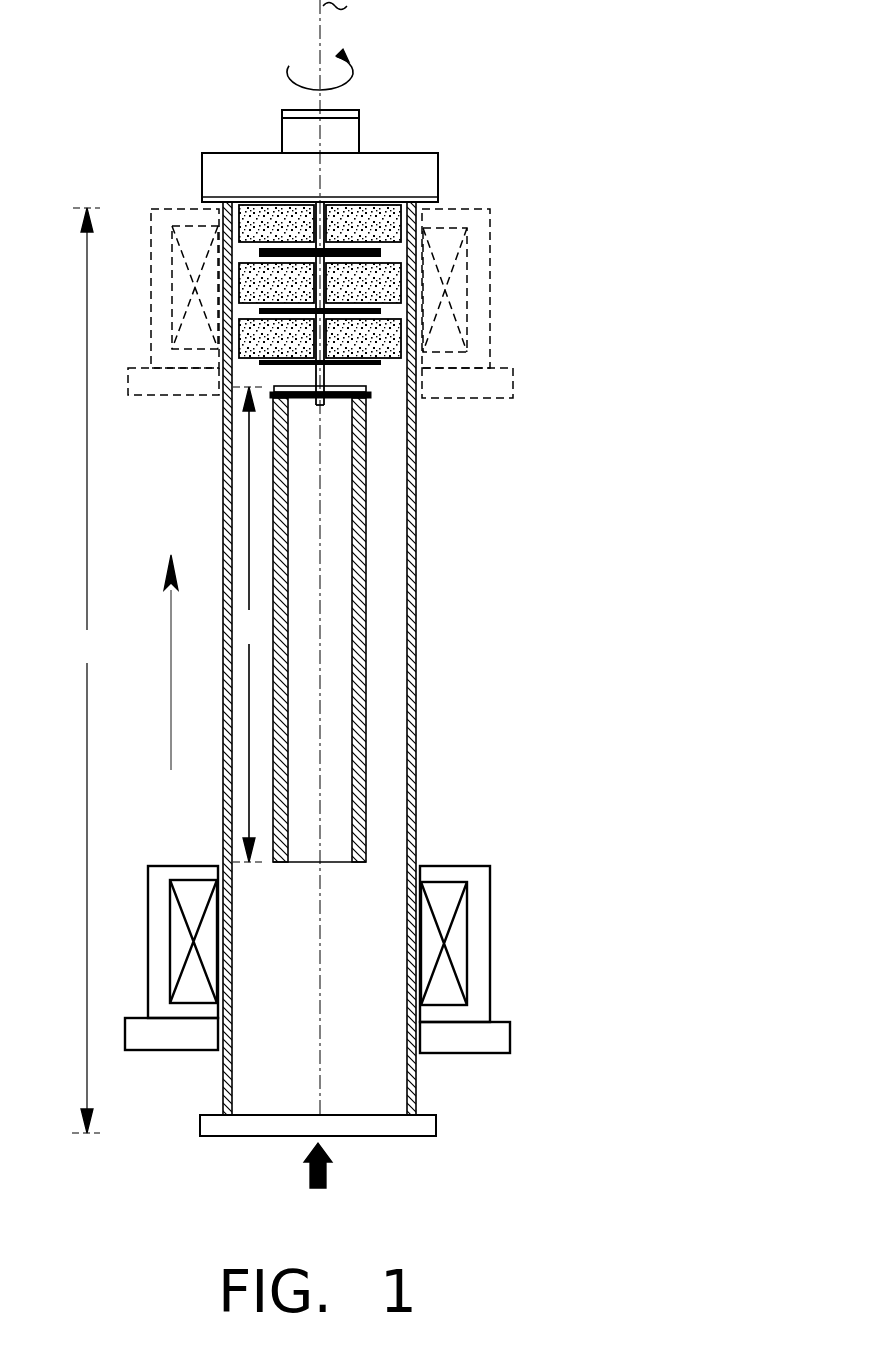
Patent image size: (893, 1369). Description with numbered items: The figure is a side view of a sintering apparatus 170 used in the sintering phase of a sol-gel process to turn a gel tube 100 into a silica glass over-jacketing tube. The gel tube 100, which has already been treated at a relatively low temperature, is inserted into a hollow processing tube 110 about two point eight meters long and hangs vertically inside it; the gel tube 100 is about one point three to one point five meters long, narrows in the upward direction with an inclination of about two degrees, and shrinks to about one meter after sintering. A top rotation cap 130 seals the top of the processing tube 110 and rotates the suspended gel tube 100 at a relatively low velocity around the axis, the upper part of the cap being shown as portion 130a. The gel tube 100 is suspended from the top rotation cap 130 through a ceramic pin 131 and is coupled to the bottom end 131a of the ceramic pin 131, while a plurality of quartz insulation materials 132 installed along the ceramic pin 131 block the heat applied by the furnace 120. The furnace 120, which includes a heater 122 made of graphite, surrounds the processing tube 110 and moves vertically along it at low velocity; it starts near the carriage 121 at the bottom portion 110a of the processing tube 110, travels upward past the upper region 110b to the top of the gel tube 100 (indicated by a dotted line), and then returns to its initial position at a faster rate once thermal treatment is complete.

The sintering apparatus 170 is at (115, 128).
The rotary shaft 130a is at (348, 135).
The top rotation cap 130 is at (428, 180).
The processing tube 110 is at (415, 735).
The upper portion of tube 110b is at (420, 278).
The bottom portion of processing tube 110a is at (413, 1085).
The furnace 120 is at (492, 228).
The coil winding 122 is at (442, 893).
The carriage 121 is at (498, 1033).
The quartz insulation material 132 is at (400, 222).
The ceramic pin 131 is at (318, 378).
The bottom end of ceramic pin 131a is at (323, 405).
The gel tube 100 is at (365, 615).